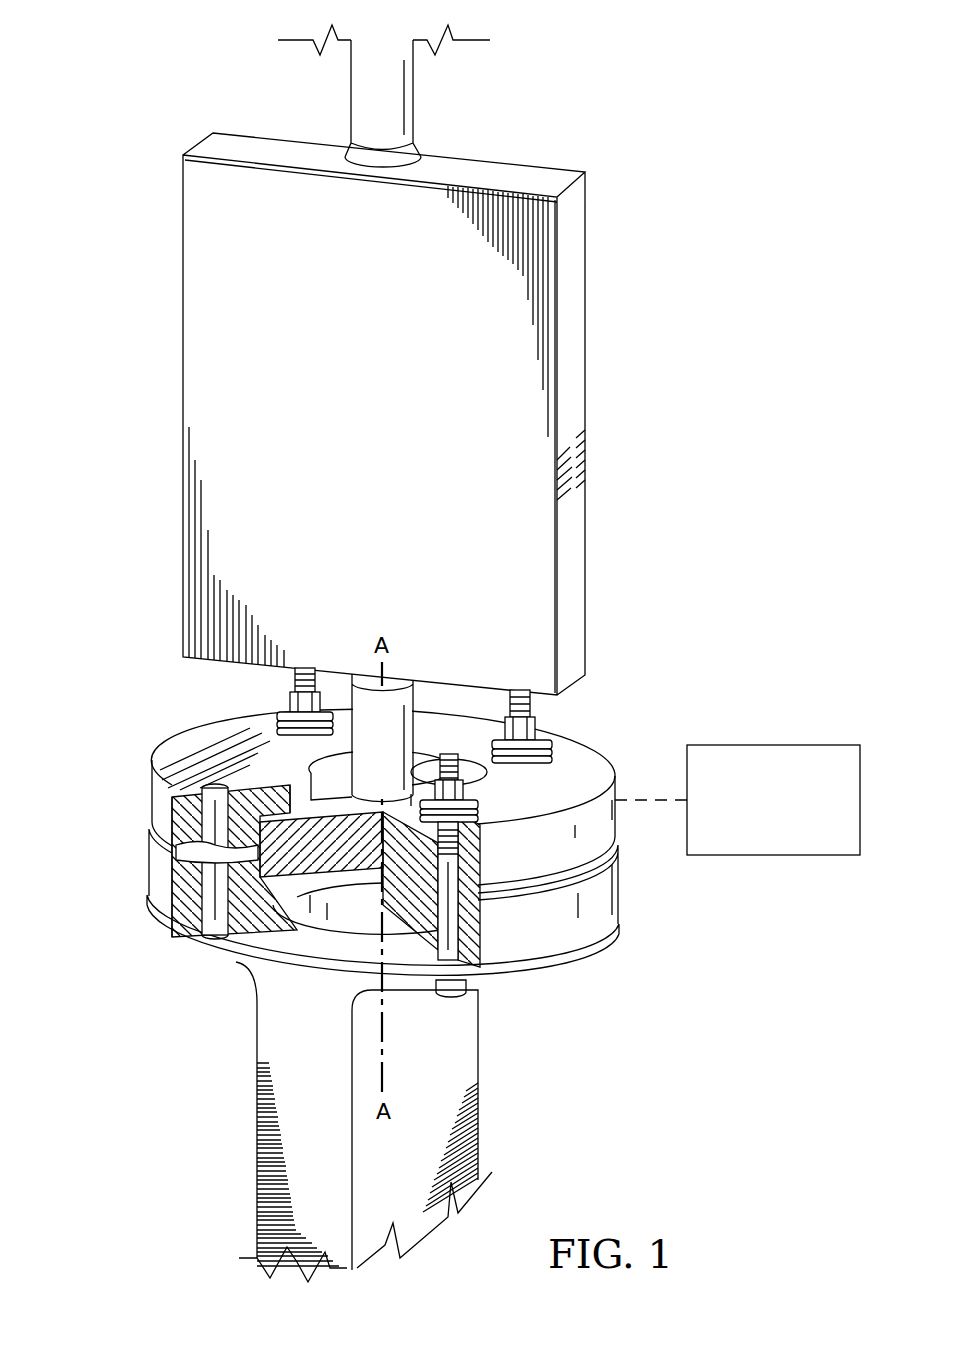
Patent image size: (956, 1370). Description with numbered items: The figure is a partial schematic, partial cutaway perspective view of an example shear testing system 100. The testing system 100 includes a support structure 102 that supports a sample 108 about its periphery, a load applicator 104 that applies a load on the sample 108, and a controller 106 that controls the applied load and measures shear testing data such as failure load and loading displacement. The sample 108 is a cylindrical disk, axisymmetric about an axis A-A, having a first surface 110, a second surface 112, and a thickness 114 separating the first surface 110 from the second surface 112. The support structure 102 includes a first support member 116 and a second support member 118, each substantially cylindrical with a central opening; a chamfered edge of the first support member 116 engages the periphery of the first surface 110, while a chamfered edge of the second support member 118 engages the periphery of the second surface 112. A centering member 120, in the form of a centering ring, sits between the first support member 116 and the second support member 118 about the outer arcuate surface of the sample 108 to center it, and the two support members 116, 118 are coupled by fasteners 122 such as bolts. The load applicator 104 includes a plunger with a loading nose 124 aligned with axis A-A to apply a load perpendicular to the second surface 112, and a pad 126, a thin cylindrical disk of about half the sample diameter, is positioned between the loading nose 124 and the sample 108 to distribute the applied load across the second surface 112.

The testing system 100 is at (213, 58).
The support structure 102 is at (190, 955).
The load applicator 104 is at (183, 400).
The controller 106 is at (797, 815).
The sample 108 is at (413, 873).
The first surface 110 is at (285, 875).
The second surface 112 is at (306, 778).
The thickness 114 is at (118, 836).
The first support member 116 is at (618, 902).
The second support member 118 is at (152, 797).
The centering member 120 is at (203, 857).
The fasteners 122 is at (540, 702).
The loading nose 124 is at (360, 694).
The pad 126 is at (479, 712).